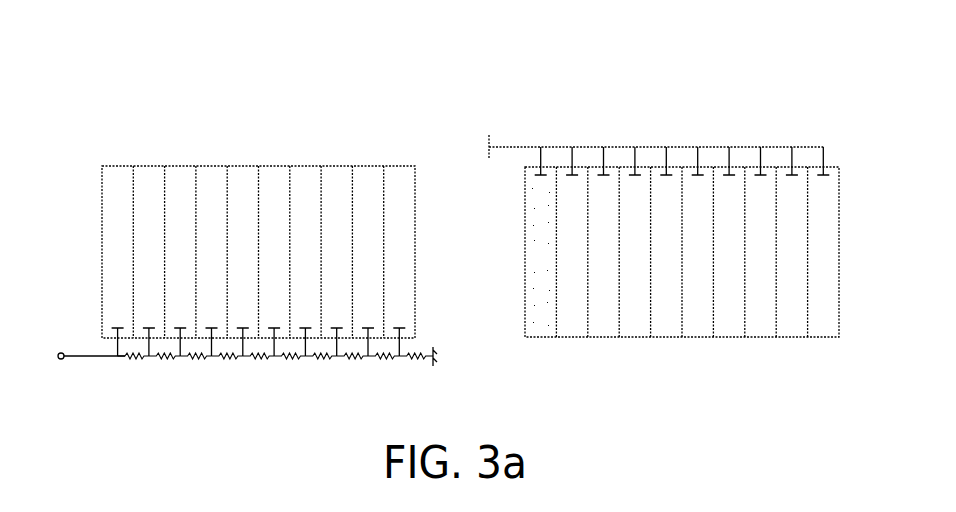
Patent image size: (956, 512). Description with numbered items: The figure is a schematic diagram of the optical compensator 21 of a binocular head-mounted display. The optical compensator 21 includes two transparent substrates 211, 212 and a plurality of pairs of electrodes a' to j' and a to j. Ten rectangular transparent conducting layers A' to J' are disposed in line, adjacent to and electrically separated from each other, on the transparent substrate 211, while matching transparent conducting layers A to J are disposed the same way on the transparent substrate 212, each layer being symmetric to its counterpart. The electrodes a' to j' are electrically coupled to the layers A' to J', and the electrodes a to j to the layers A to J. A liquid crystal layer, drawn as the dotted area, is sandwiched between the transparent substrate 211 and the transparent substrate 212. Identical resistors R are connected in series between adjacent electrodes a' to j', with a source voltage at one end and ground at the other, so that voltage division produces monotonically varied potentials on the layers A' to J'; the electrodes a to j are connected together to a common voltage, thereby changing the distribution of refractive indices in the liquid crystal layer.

The optical compensator 21 is at (134, 126).
The transparent substrate 211 is at (415, 253).
The transparent substrate 212 is at (525, 283).